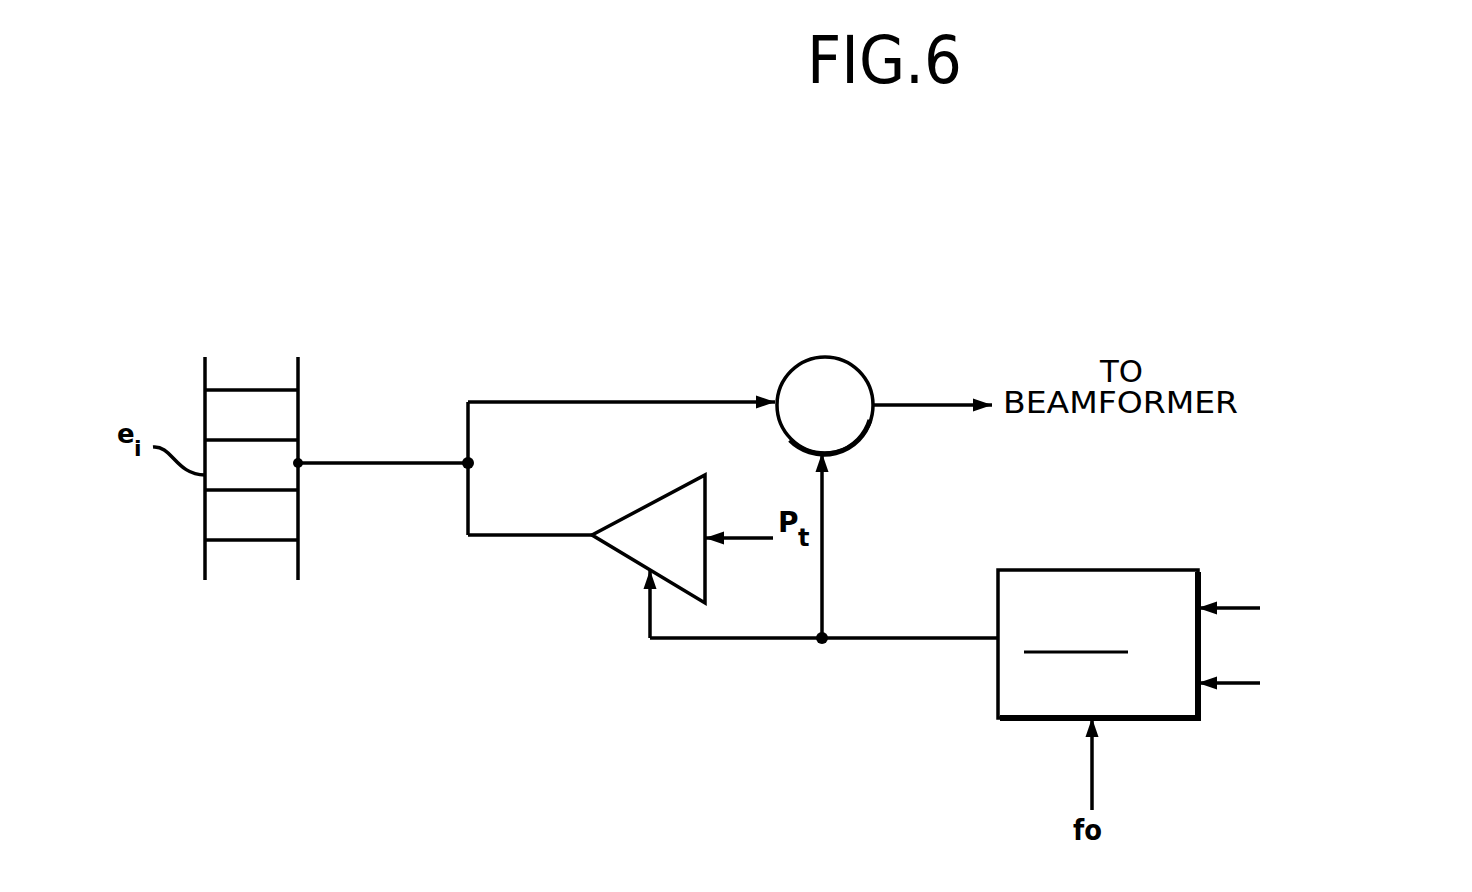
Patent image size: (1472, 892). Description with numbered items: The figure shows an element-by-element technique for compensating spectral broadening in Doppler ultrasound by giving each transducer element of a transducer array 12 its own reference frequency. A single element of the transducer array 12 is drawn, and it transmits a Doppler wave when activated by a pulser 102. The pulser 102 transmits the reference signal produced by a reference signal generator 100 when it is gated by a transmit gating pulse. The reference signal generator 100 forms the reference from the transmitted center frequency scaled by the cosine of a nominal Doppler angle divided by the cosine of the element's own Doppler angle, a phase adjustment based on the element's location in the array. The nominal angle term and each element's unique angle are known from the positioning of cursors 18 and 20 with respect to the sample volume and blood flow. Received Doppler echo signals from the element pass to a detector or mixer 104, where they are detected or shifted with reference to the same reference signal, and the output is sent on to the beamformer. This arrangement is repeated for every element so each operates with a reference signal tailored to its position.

The transducer array 12 is at (178, 530).
The reference signal generator 100 is at (1130, 582).
The pulser 102 is at (668, 502).
The detector or mixer 104 is at (817, 367).
The cursor 20 is at (1325, 611).
The cursor 18 is at (1325, 686).